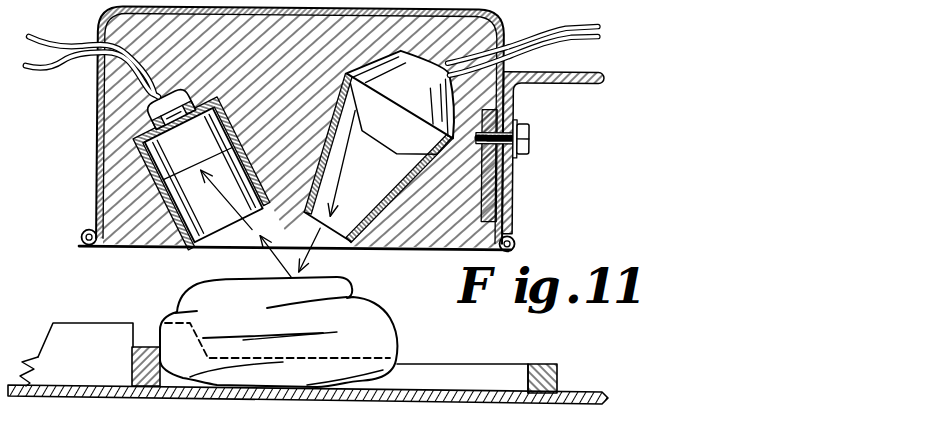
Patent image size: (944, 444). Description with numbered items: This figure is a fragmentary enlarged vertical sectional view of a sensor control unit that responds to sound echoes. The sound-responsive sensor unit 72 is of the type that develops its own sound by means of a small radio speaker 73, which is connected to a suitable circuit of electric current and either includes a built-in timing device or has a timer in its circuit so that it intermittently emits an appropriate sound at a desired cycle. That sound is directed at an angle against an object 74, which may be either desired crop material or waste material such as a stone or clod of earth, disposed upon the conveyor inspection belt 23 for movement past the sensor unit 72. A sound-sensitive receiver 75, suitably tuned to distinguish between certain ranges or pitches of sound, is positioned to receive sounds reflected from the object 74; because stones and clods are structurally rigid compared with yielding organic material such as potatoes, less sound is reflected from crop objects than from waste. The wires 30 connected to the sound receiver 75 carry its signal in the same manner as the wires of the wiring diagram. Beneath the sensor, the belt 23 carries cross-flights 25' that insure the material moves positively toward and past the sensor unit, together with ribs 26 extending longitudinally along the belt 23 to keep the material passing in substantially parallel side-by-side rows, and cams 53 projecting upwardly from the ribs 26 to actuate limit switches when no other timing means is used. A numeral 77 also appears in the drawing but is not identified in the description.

The wires 30 is at (57, 74).
The sound-responsive sensor unit 72 is at (95, 154).
The sound-sensitive receiver 75 is at (138, 170).
The radio speaker 73 is at (513, 97).
The cams 53 is at (83, 328).
The cross-flights 25' is at (370, 341).
The object 74 is at (380, 340).
The ribs 26 is at (457, 378).
The conveyor inspection belt 23 is at (173, 398).
The support 77 is at (493, 439).